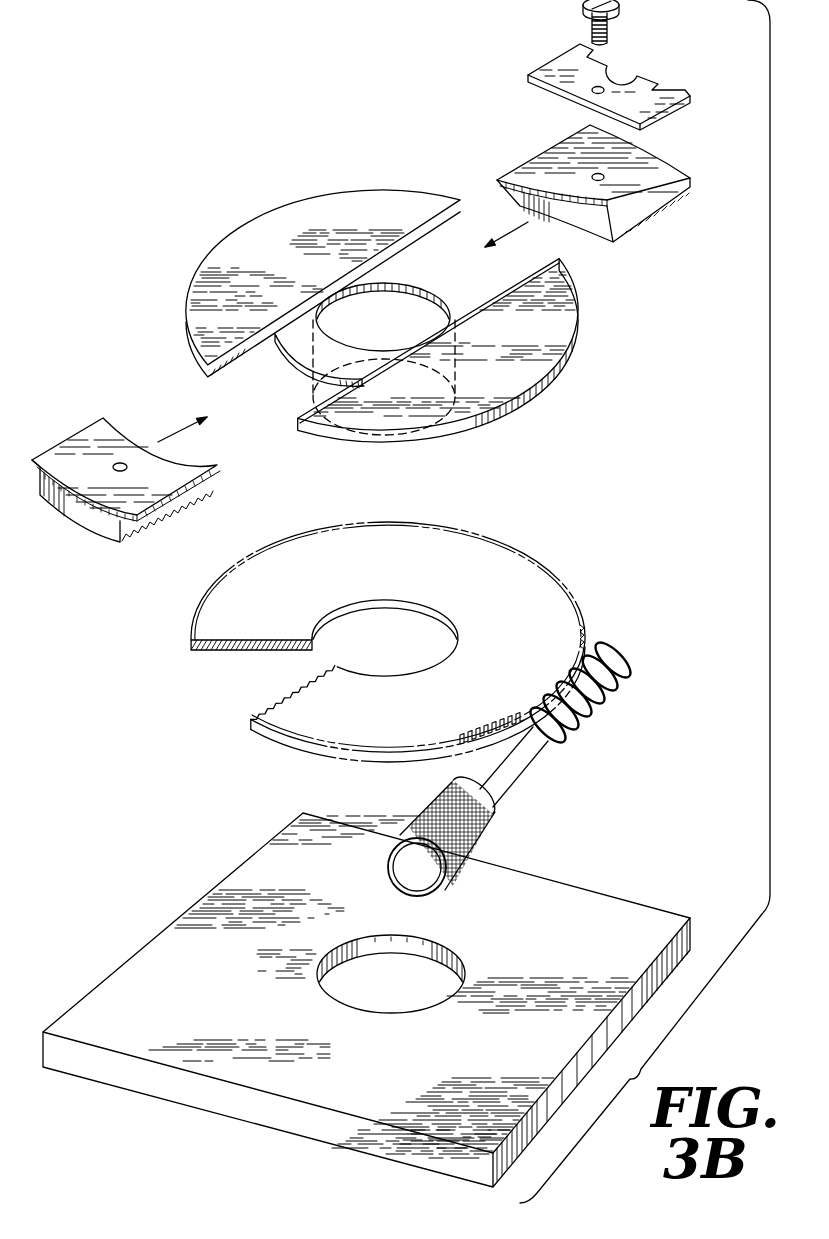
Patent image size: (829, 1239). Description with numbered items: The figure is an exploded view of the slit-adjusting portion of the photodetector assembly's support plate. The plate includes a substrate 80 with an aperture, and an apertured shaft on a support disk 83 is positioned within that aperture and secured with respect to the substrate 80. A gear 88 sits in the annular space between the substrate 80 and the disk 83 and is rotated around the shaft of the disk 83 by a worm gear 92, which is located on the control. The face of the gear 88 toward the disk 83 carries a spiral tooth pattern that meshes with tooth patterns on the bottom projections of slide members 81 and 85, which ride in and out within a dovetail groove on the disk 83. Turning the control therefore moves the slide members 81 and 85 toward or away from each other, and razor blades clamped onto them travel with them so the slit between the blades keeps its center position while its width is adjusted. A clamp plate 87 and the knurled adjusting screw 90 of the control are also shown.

The substrate 80 is at (562, 956).
The slide member 81 is at (80, 443).
The support disk 83 is at (563, 307).
The slide member 85 is at (670, 170).
The clamp plate 87 is at (680, 107).
The gear 88 is at (550, 595).
The knurled adjusting screw 90 is at (517, 777).
The worm gear 92 is at (633, 675).